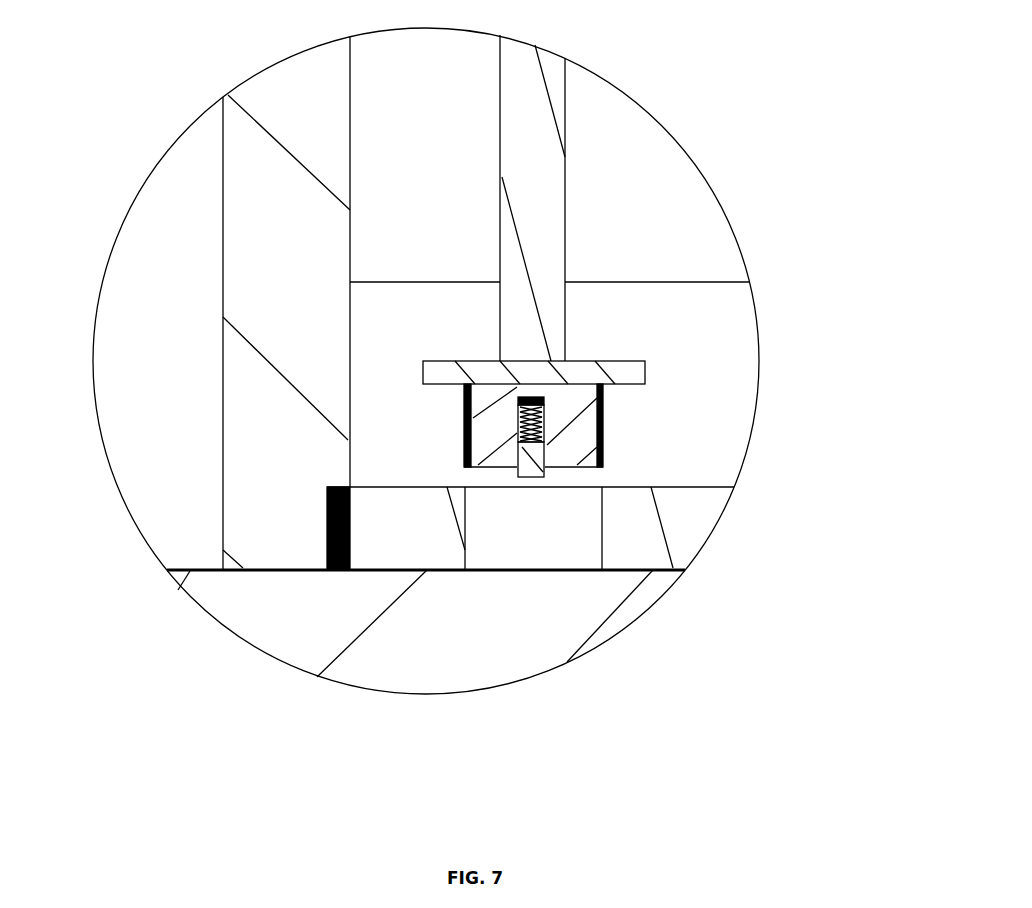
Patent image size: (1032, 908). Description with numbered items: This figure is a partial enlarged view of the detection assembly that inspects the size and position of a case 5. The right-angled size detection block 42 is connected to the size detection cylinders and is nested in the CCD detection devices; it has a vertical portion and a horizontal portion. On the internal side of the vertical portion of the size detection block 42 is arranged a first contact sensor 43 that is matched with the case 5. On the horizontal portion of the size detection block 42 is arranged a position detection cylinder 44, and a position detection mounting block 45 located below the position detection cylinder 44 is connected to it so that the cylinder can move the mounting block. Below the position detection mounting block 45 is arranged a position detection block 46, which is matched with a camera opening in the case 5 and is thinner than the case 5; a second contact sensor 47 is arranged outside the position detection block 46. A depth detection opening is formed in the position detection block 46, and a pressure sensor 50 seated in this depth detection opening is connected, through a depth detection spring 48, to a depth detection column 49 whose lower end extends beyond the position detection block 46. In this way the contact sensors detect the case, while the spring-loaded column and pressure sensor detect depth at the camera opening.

The case 5 is at (443, 540).
The right-angled size detection block 42 is at (300, 500).
The first contact sensor 43 is at (327, 538).
The position detection cylinder 44 is at (540, 225).
The position detection mounting block 45 is at (583, 373).
The position detection block 46 is at (497, 435).
The second contact sensor 47 is at (603, 423).
The depth detection spring 48 is at (545, 445).
The depth detection column 49 is at (520, 477).
The pressure sensor 50 is at (540, 397).